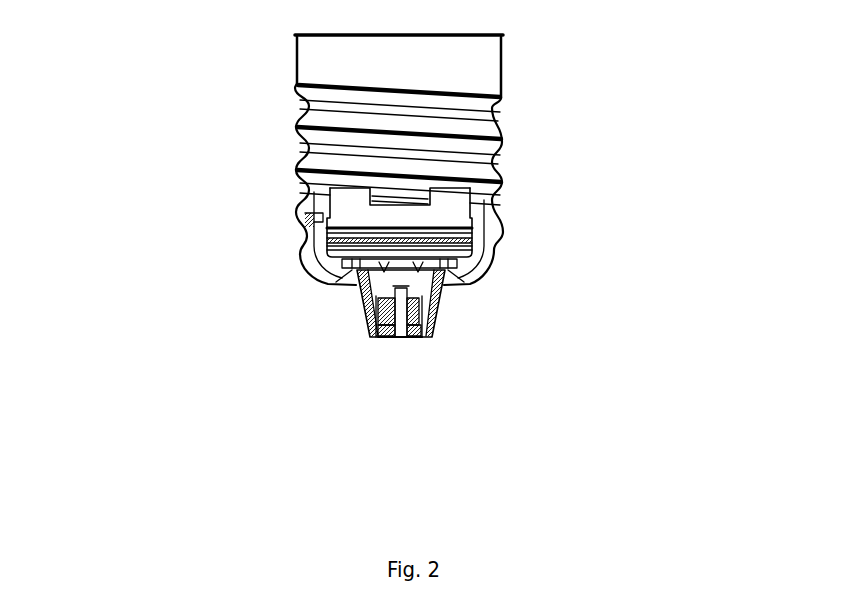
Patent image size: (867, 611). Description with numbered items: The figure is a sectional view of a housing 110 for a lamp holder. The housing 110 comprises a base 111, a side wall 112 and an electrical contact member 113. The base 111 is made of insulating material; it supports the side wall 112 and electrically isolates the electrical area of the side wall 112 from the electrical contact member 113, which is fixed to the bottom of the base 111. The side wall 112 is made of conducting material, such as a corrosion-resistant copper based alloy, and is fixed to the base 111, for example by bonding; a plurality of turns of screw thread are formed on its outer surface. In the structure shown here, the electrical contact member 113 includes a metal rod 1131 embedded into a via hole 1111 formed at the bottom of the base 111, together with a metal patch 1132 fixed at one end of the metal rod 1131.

The lamp cap housing 110 is at (523, 118).
The side wall 112 is at (493, 173).
The base 111 is at (437, 317).
The via hole 1111 is at (400, 338).
The electrical contact member 113 is at (283, 383).
The metal rod 1131 is at (392, 311).
The metal patch 1132 is at (376, 336).